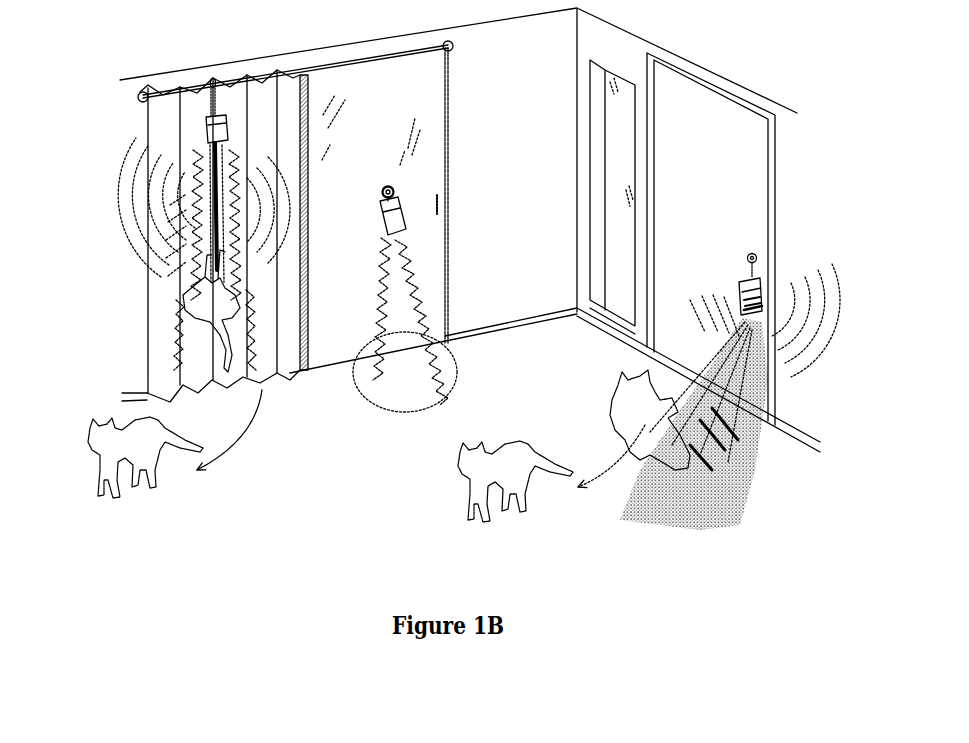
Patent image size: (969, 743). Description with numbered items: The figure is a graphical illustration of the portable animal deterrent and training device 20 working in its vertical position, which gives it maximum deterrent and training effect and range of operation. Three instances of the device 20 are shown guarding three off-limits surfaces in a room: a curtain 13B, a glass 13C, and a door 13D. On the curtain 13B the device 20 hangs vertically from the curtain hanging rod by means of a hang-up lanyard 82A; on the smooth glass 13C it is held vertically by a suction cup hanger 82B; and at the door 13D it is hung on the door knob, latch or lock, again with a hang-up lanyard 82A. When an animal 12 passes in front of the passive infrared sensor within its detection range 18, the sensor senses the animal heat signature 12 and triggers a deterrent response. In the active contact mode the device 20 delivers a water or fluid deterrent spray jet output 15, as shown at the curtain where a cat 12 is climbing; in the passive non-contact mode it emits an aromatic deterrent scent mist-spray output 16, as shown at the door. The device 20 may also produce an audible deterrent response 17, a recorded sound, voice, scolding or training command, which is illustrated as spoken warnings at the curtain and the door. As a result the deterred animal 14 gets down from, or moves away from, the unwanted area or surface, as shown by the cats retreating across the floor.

The animal 12 is at (220, 297).
The curtain 13B is at (176, 141).
The glass 13C is at (373, 71).
The door 13D is at (758, 148).
The deterred animal 14 is at (112, 456).
The water or fluid deterrent spray jet output 15 is at (213, 163).
The aromatic deterrent scent mist-spray output 16 is at (758, 308).
The deterrent response 17 is at (286, 251).
The detection range 18 is at (180, 333).
The portable animal deterrent and training device 20 is at (205, 128).
The hang-up lanyard 82A is at (198, 103).
The suction cup hanger 82B is at (376, 186).